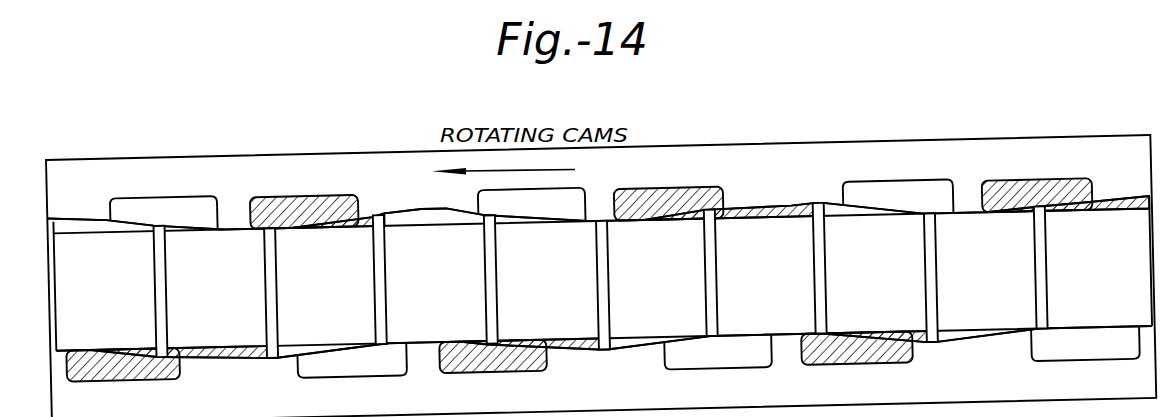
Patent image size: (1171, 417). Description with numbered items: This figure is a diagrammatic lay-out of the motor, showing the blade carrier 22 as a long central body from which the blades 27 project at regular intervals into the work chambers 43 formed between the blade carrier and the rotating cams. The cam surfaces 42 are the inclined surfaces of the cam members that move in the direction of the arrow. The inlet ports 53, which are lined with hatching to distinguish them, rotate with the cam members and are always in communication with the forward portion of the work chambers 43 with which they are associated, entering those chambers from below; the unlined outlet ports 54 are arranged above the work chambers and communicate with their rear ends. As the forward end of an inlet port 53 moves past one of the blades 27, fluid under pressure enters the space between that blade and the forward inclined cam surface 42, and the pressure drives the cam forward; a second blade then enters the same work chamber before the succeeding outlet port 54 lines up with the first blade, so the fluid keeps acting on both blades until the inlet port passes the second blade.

The blade carrier 22 is at (987, 278).
The blades 27 is at (483, 274).
The cam surfaces 42 is at (780, 202).
The work chambers 43 is at (830, 210).
The inlet ports 53 is at (302, 197).
The outlet ports 54 is at (158, 207).